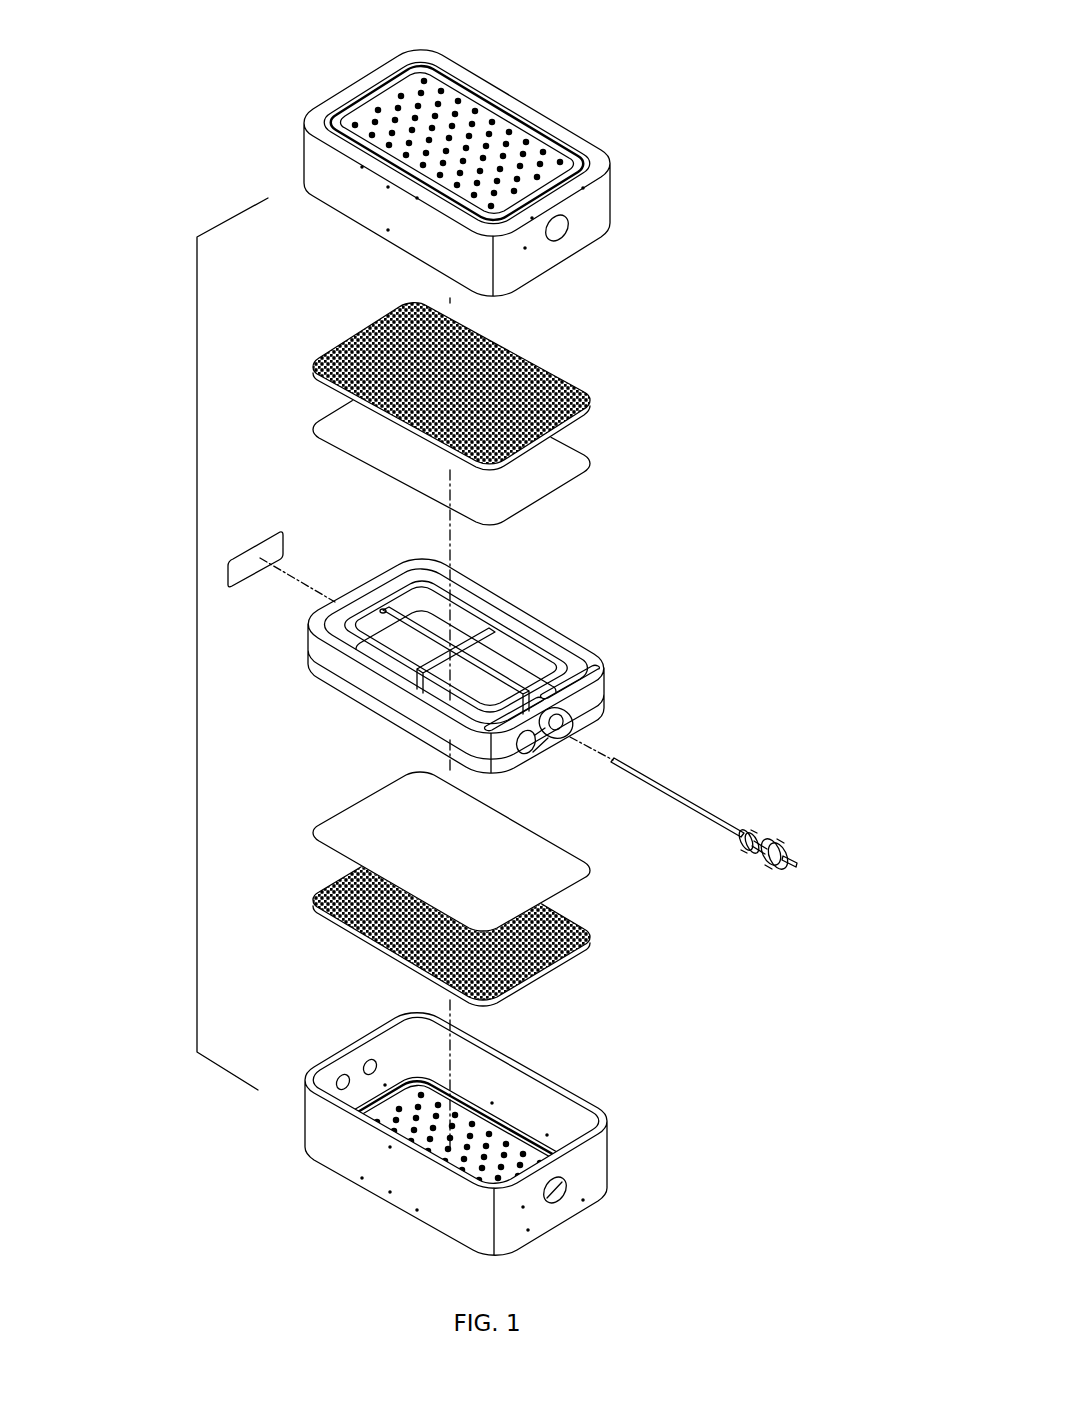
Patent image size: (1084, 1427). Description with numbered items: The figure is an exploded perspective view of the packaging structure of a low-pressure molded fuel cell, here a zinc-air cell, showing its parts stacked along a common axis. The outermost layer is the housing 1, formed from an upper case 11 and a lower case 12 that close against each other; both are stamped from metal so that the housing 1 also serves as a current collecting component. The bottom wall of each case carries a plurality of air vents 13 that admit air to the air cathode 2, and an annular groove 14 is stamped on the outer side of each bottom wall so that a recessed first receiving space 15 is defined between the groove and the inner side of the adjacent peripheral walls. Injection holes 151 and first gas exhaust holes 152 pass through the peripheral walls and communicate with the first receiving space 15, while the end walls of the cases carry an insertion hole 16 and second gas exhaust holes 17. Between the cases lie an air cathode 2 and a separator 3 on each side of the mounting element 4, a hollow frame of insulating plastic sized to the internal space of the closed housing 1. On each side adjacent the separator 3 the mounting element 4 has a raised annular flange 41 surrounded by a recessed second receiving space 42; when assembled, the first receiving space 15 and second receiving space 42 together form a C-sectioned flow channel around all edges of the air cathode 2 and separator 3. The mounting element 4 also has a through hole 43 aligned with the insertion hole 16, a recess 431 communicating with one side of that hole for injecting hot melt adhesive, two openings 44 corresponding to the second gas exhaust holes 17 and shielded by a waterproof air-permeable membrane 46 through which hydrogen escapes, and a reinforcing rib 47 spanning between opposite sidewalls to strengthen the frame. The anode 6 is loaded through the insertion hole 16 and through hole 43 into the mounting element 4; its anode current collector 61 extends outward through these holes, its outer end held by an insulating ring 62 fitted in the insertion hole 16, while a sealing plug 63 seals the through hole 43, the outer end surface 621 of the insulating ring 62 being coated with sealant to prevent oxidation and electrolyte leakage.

The housing 1 is at (197, 647).
The upper case 11 is at (612, 190).
The lower case 12 is at (607, 1150).
The air vents 13 is at (500, 113).
The annular groove 14 is at (343, 102).
The first receiving space 15 is at (497, 1117).
The injection hole 151 is at (388, 230).
The first gas exhaust hole 152 is at (362, 167).
The insertion hole 16 is at (560, 240).
The second gas exhaust hole 17 is at (345, 1073).
The air cathode 2 is at (560, 395).
The separator 3 is at (568, 462).
The mounting element 4 is at (532, 622).
The annular flange 41 is at (483, 617).
The second receiving space 42 is at (596, 655).
The through hole 43 is at (566, 735).
The recess 431 is at (530, 752).
The opening 44 is at (383, 608).
The waterproof air-permeable membrane 46 is at (272, 552).
The reinforcing rib 47 is at (400, 632).
The anode 6 is at (668, 752).
The anode current collector 61 is at (688, 803).
The insulating ring 62 is at (790, 845).
The outer end surface 621 is at (768, 866).
The sealing plug 63 is at (757, 833).